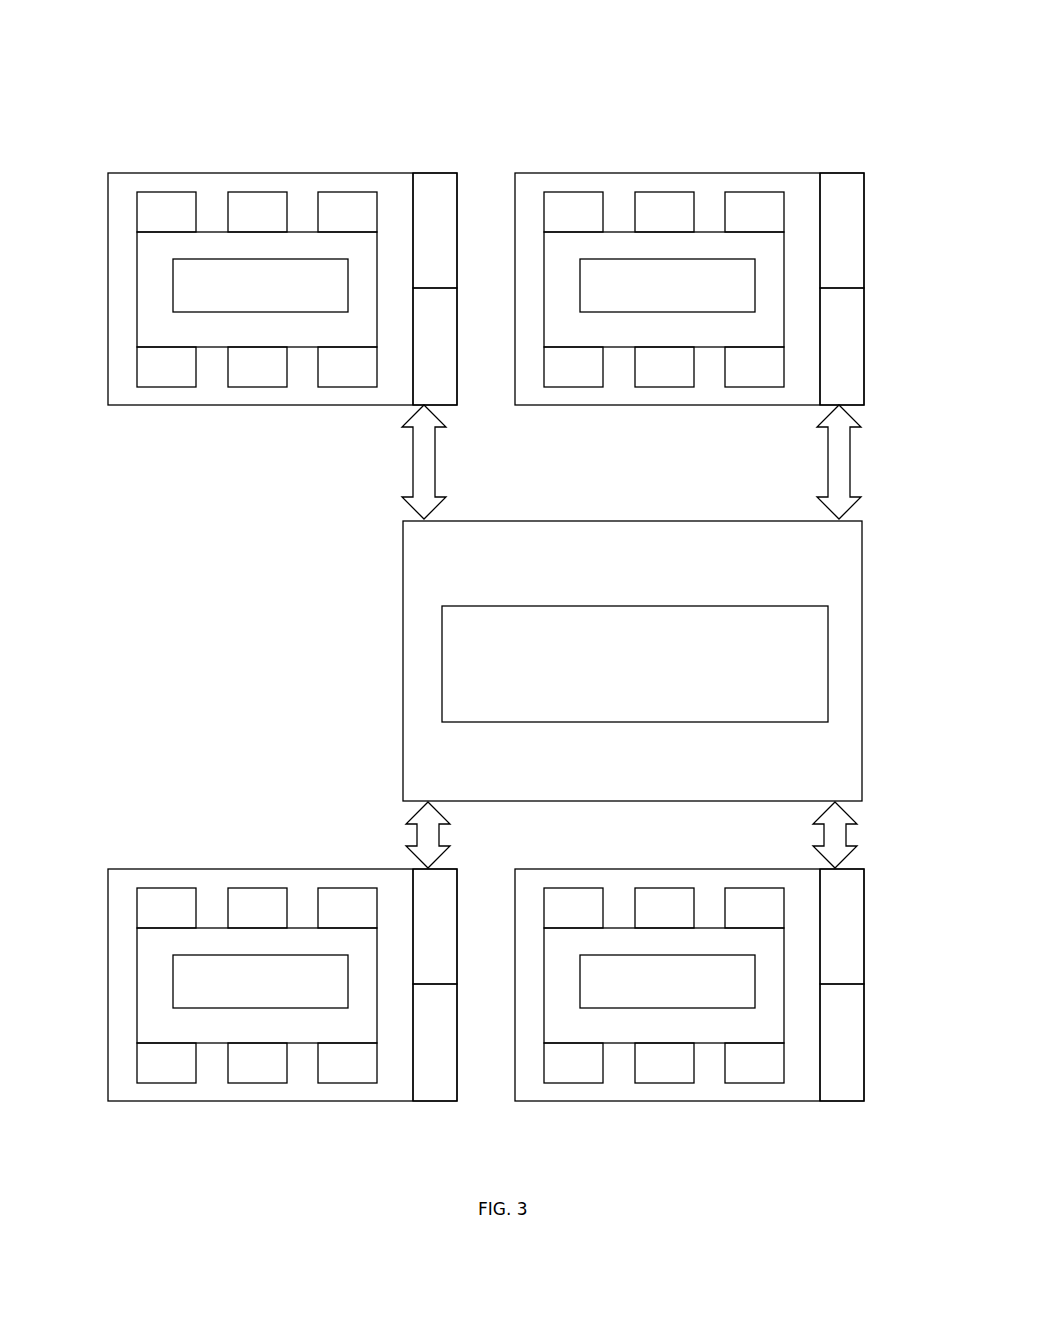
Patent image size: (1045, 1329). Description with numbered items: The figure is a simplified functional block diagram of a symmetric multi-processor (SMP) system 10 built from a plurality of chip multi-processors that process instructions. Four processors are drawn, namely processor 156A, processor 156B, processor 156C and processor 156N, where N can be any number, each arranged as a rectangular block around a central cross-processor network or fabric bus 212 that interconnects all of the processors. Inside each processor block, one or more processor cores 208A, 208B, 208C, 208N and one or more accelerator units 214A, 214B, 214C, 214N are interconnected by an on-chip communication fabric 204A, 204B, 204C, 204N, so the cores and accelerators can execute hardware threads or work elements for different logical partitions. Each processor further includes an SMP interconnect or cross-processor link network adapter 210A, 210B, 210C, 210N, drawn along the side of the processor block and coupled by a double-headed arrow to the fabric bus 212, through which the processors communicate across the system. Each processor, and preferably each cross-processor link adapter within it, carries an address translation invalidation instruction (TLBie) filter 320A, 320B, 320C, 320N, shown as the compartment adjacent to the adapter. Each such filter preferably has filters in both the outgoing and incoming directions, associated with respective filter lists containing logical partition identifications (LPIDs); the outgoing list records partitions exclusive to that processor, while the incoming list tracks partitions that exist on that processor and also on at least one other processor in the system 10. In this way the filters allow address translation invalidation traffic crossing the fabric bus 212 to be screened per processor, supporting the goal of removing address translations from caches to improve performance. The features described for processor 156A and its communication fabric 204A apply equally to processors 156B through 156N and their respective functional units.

The SMP system 10 is at (307, 52).
The fabric bus 212 is at (535, 521).
The processor 156A is at (137, 172).
The processor 156B is at (257, 1102).
The processor 156C is at (798, 173).
The processor 156N is at (515, 889).
The communication fabric 204A is at (137, 288).
The communication fabric 204B is at (137, 985).
The communication fabric 204C is at (618, 230).
The communication fabric 204N is at (617, 927).
The processor core 208A is at (166, 192).
The processor core 208B is at (167, 888).
The processor core 208C is at (572, 192).
The processor core 208N is at (573, 888).
The accelerator unit 214A is at (257, 192).
The accelerator unit 214B is at (257, 888).
The accelerator unit 214C is at (665, 192).
The accelerator unit 214N is at (648, 888).
The cross-processor link network adapter 210A is at (457, 378).
The cross-processor link network adapter 210B is at (457, 962).
The cross-processor link network adapter 210C is at (864, 348).
The cross-processor link network adapter 210N is at (864, 937).
The address translation invalidation filter 320A is at (435, 215).
The address translation invalidation filter 320B is at (457, 1067).
The address translation invalidation filter 320C is at (847, 232).
The address translation invalidation filter 320N is at (864, 1036).